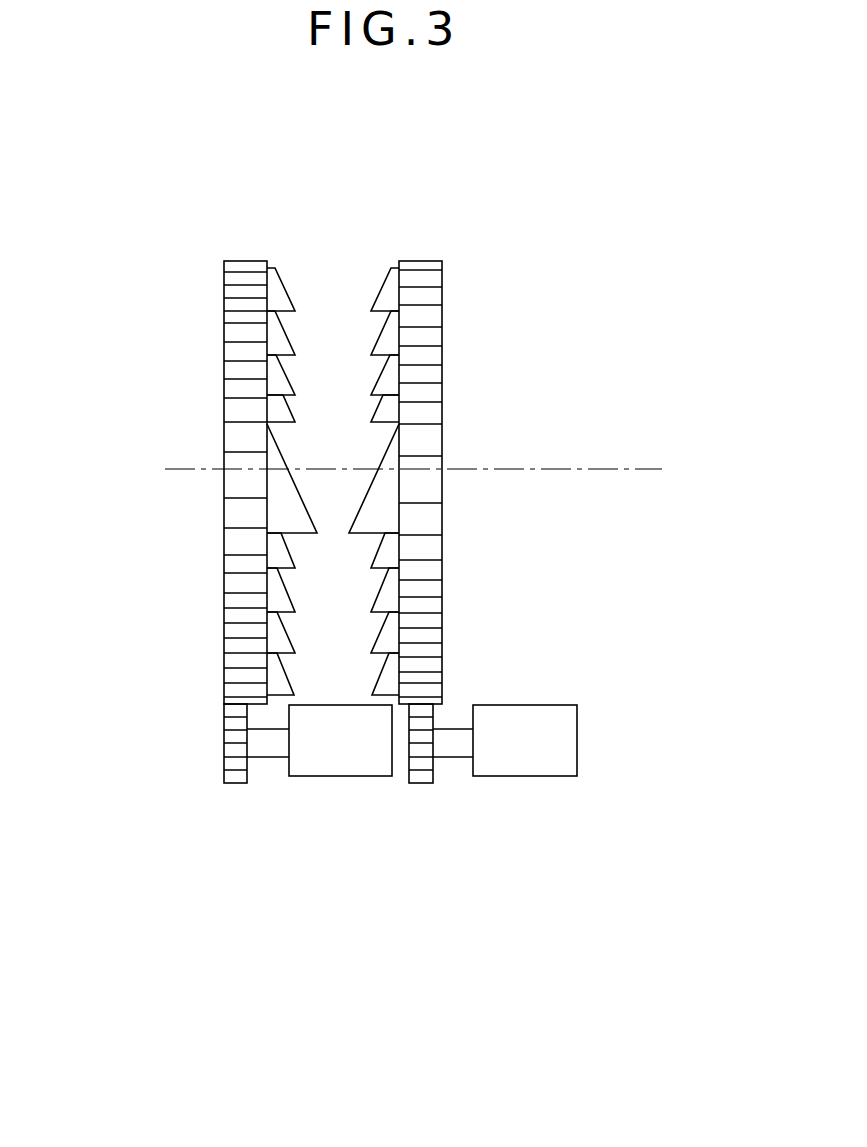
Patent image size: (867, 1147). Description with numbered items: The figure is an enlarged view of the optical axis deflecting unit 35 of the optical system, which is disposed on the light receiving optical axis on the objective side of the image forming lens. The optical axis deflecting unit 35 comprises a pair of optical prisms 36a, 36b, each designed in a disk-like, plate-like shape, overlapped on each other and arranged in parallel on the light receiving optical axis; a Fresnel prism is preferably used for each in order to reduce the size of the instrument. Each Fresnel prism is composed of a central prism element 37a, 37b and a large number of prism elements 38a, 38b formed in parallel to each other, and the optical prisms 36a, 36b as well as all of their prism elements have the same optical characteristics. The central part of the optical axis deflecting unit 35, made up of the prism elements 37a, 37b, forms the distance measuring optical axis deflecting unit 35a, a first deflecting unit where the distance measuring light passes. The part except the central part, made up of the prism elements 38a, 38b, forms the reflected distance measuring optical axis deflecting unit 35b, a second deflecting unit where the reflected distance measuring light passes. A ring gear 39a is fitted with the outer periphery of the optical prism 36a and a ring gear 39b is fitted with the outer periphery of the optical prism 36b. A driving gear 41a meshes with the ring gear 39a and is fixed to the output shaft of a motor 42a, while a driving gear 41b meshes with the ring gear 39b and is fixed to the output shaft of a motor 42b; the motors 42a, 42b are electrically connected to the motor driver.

The optical axis deflecting unit 35 is at (495, 272).
The distance measuring optical axis deflecting unit 35a is at (224, 482).
The reflected distance measuring optical axis deflecting unit 35b is at (224, 340).
The optical prism 36a is at (173, 406).
The optical prism 36b is at (483, 404).
The prism element 37a is at (267, 422).
The prism element 37b is at (400, 425).
The prism elements 38a is at (288, 282).
The prism elements 38b is at (376, 287).
The ring gear 39a is at (245, 261).
The ring gear 39b is at (422, 261).
The driving gear 41a is at (228, 785).
The driving gear 41b is at (418, 785).
The motor 42a is at (310, 777).
The motor 42b is at (542, 777).